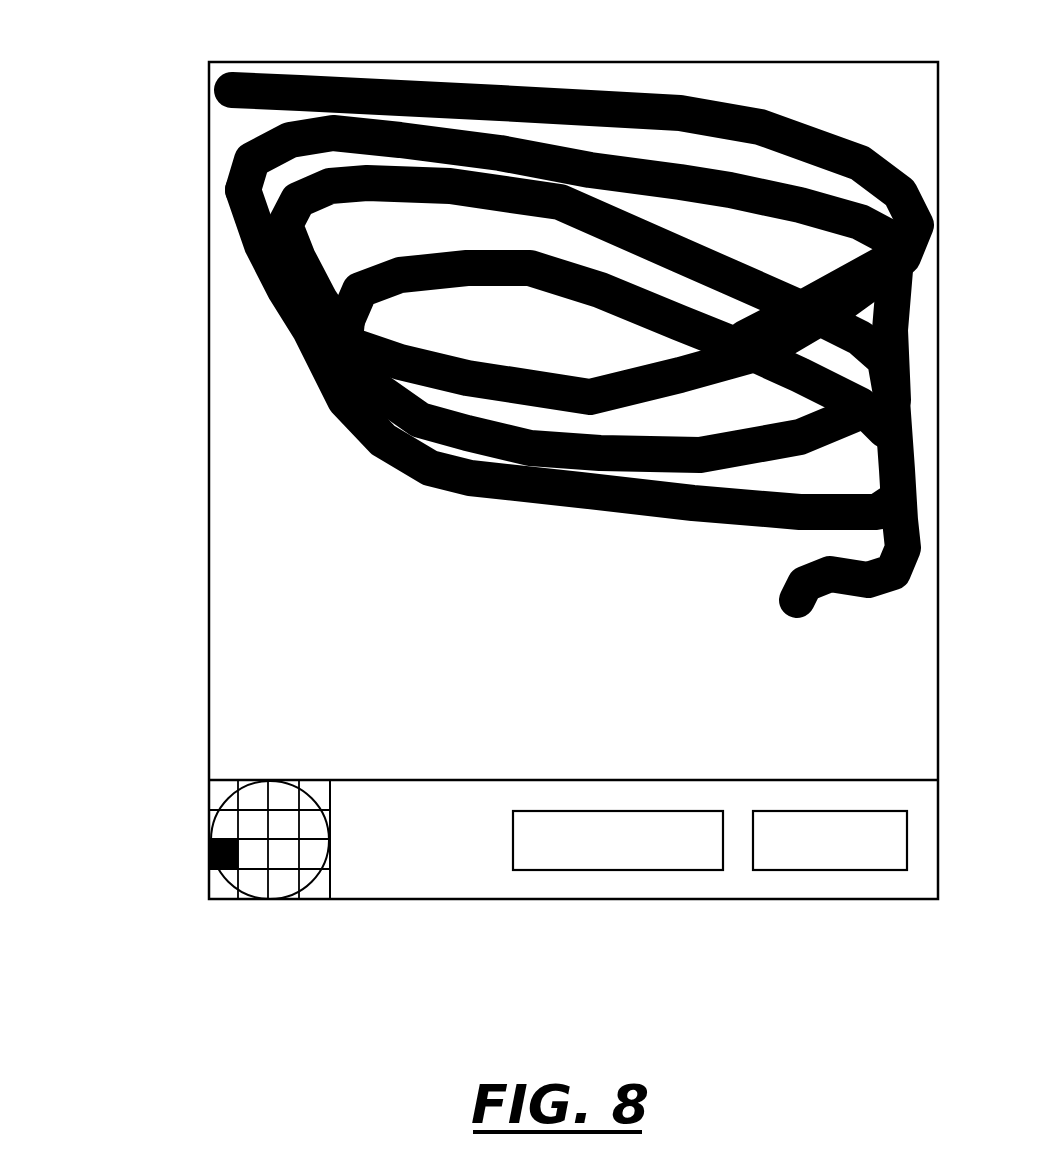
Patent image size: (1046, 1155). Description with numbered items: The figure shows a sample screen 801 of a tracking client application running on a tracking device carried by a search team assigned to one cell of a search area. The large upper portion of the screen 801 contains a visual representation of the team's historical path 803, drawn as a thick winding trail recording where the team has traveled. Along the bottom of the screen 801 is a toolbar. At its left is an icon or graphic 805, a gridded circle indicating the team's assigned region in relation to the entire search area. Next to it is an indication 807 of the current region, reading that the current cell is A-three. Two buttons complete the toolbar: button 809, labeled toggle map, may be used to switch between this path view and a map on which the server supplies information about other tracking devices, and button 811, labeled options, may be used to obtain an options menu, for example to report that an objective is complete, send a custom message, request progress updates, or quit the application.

The screen 801 is at (207, 393).
The historical path 803 is at (420, 490).
The icon or graphic 805 is at (272, 900).
The indication of the current region 807 is at (422, 870).
The button 809 is at (618, 870).
The button 811 is at (830, 870).